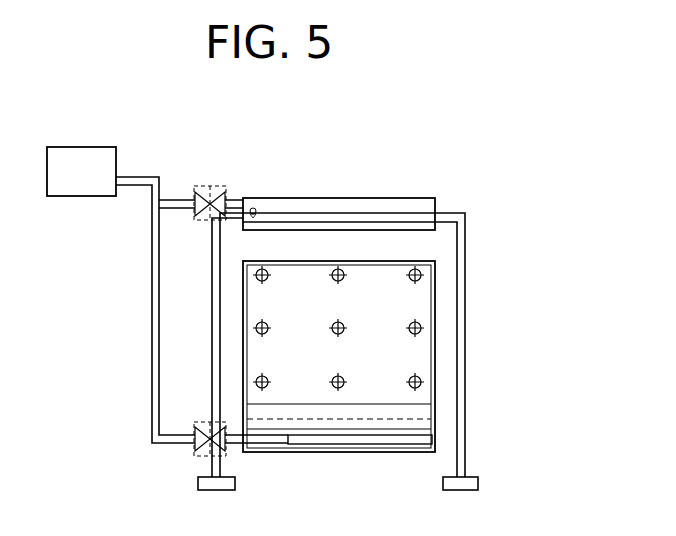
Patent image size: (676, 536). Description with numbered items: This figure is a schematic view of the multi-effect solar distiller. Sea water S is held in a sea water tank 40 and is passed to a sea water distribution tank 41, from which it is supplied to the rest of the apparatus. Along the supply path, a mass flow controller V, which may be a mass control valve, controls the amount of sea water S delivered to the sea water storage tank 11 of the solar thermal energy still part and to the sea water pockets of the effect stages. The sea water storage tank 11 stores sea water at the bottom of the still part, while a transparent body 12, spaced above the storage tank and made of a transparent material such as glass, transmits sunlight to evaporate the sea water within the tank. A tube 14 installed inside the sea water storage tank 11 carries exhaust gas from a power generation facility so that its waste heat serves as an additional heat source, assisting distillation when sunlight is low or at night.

The sea water tank 40 is at (89, 151).
The sea water distribution tank 41 is at (345, 207).
The transparent body 12 is at (423, 298).
The sea water storage tank 11 is at (425, 412).
The tube 14 is at (433, 440).
The mass flow controller V is at (203, 186).
The sea water S is at (178, 434).